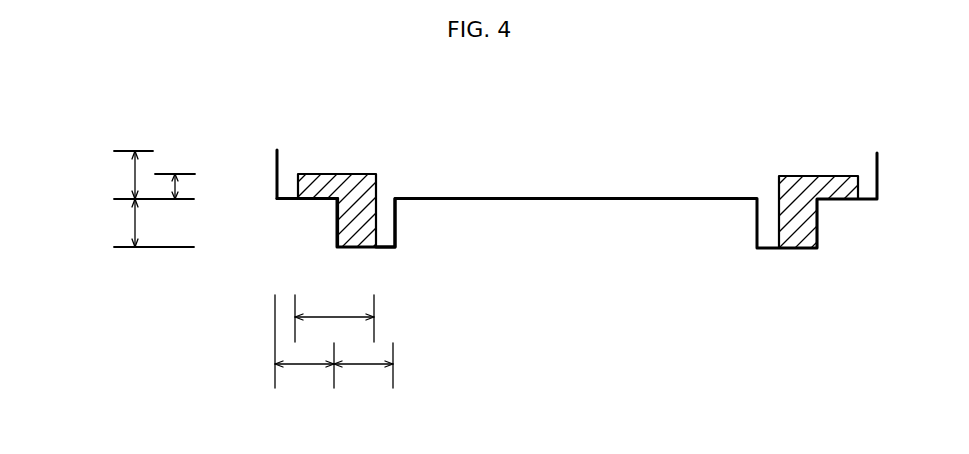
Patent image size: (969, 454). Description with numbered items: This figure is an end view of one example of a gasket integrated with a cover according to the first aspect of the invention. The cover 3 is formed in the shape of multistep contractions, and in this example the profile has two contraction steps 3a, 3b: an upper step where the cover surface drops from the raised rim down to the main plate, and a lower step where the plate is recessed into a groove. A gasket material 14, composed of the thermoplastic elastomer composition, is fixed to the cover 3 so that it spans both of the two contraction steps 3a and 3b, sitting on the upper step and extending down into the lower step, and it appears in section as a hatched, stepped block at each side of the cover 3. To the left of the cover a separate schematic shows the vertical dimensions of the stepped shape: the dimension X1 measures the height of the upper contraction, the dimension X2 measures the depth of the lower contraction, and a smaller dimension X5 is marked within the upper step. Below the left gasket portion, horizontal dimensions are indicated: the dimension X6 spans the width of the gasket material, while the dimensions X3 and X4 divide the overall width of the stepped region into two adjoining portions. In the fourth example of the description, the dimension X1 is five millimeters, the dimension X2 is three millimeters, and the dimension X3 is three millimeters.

The cover 3 is at (580, 197).
The contraction step 3a is at (288, 196).
The contraction step 3b is at (384, 243).
The gasket material 14 is at (355, 188).
The dimension X1 is at (132, 174).
The dimension X2 is at (131, 224).
The dimension X3 is at (305, 370).
The dimension X4 is at (358, 370).
The dimension X5 is at (178, 190).
The dimension X6 is at (343, 317).